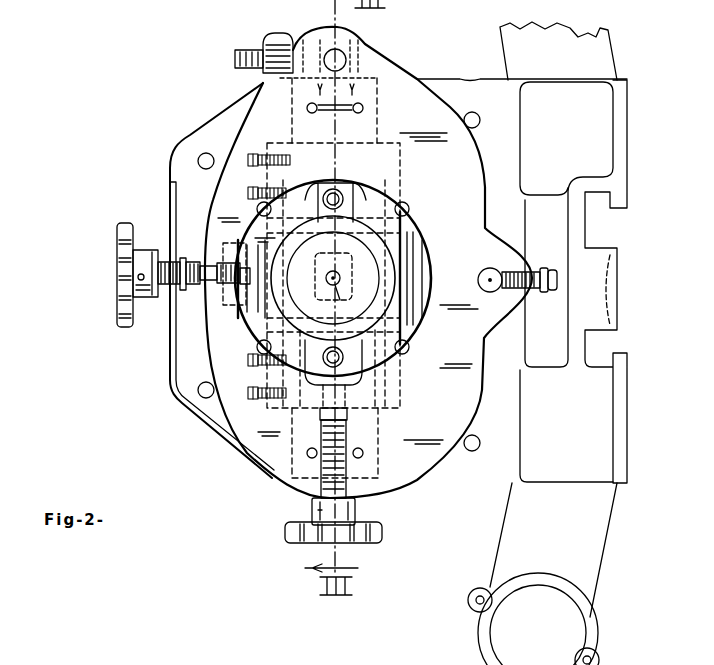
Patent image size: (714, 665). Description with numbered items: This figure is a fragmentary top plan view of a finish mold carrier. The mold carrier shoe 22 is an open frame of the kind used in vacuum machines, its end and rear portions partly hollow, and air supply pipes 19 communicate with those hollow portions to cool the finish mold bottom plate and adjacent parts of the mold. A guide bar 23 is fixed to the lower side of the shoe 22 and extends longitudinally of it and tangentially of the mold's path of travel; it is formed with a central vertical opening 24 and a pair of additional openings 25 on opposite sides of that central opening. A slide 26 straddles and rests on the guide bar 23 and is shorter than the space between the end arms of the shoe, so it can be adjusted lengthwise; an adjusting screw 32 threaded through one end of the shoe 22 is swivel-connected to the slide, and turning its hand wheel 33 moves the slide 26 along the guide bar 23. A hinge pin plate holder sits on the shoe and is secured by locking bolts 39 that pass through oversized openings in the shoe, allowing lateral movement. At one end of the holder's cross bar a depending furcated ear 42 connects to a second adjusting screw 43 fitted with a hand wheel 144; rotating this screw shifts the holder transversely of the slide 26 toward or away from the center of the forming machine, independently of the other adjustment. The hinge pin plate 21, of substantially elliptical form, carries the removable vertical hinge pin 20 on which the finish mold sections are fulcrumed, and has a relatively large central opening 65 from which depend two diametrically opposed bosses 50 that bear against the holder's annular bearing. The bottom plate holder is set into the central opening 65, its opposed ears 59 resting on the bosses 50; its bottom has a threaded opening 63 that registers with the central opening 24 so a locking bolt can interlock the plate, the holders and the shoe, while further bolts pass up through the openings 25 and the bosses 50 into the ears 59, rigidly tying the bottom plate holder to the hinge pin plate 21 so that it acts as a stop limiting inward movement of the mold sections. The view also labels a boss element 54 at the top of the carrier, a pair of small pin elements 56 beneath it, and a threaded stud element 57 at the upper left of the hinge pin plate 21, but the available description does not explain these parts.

The air supply pipes 19 is at (510, 50).
The vertical hinge pin 20 is at (489, 275).
The hinge pin plate 21 is at (222, 188).
The mold carrier shoe 22 is at (447, 480).
The guide bar 23 is at (379, 120).
The central vertical opening 24 is at (342, 272).
The additional openings 25 is at (345, 180).
The slide 26 is at (400, 175).
The adjusting screw 32 is at (312, 497).
The hand wheel 33 is at (308, 538).
The locking bolts 39 is at (215, 145).
The depending furcated ear 42 is at (234, 302).
The adjusting screw 43 is at (163, 249).
The bosses 50 is at (388, 206).
The pivot boss 54 is at (343, 62).
The guide pins 56 is at (335, 271).
The stop screw 57 is at (263, 44).
The opposed ears 59 is at (330, 178).
The threaded opening 63 is at (340, 300).
The central opening 65 is at (248, 232).
The hand wheel 144 is at (116, 252).